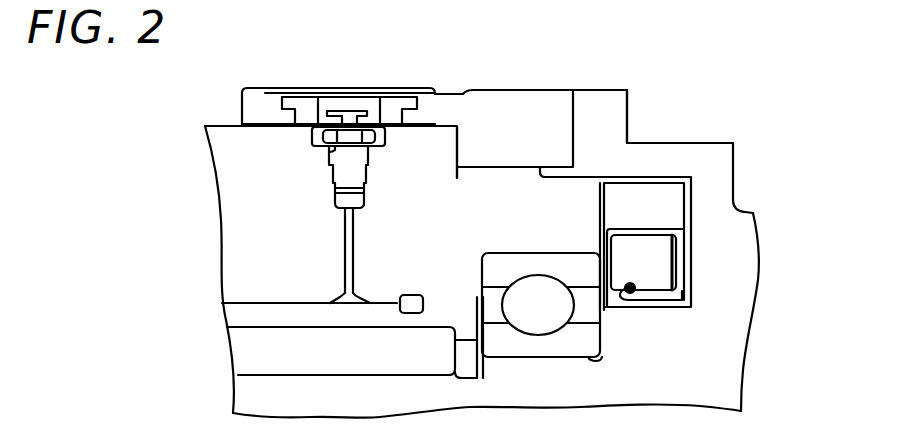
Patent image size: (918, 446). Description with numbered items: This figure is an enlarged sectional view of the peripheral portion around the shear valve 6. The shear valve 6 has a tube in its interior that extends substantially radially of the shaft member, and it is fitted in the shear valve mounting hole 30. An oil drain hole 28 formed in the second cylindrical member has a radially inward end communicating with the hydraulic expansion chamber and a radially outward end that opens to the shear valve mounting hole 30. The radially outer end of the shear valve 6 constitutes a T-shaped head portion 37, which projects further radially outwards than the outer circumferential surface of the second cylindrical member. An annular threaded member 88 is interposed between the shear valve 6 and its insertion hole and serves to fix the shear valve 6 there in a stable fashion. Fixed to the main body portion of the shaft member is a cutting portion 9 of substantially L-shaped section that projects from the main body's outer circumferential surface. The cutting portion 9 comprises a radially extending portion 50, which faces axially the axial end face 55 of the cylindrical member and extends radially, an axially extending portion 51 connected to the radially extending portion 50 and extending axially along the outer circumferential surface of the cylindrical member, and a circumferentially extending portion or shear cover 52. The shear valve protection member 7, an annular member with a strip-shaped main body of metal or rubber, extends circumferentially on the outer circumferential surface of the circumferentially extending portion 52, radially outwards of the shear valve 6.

The radially extending portion 50 is at (715, 185).
The circumferentially extending portion (shear cover) 52 is at (250, 100).
The shear valve protection member 7 is at (307, 86).
The annular threaded member 88 is at (395, 105).
The T-shaped head portion 37 is at (352, 108).
The shear valve 6 is at (362, 156).
The shear valve mounting hole 30 is at (332, 153).
The oil drain hole 28 is at (343, 247).
The axially extending portion 51 is at (513, 130).
The cutting portion 9 is at (535, 108).
The axial end face 55 is at (685, 213).